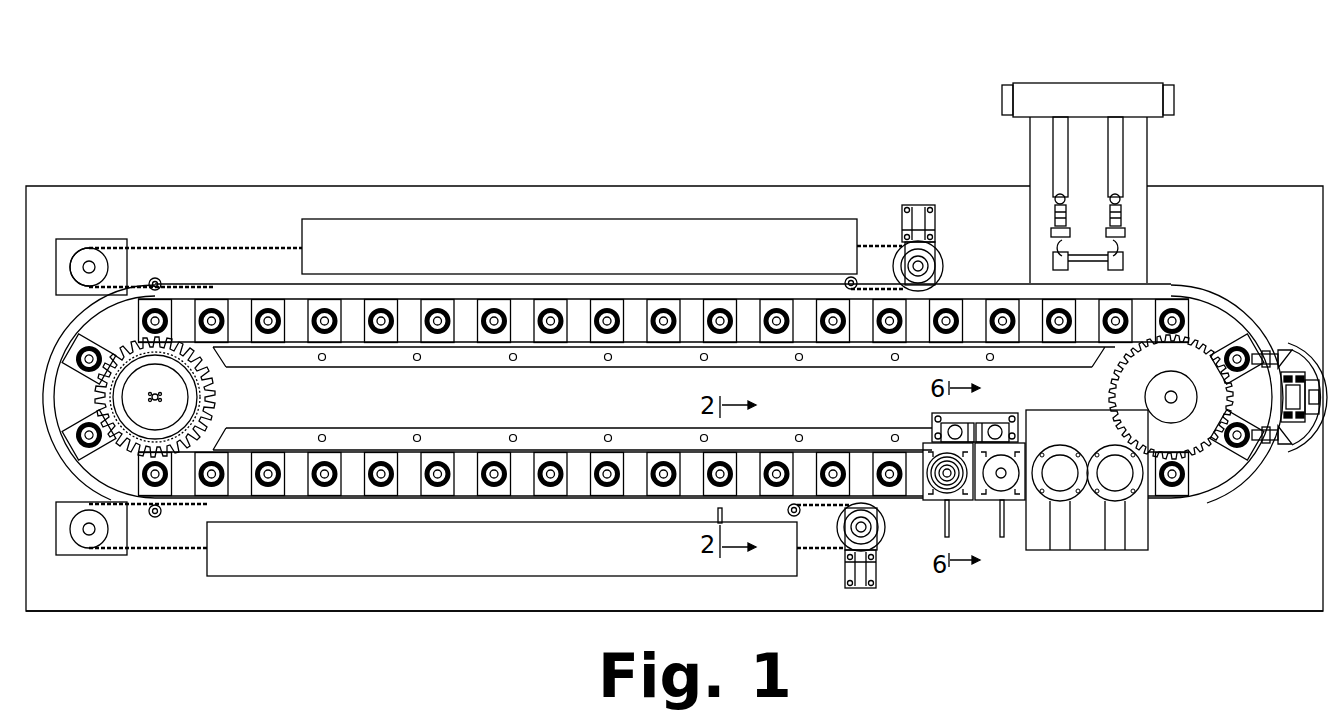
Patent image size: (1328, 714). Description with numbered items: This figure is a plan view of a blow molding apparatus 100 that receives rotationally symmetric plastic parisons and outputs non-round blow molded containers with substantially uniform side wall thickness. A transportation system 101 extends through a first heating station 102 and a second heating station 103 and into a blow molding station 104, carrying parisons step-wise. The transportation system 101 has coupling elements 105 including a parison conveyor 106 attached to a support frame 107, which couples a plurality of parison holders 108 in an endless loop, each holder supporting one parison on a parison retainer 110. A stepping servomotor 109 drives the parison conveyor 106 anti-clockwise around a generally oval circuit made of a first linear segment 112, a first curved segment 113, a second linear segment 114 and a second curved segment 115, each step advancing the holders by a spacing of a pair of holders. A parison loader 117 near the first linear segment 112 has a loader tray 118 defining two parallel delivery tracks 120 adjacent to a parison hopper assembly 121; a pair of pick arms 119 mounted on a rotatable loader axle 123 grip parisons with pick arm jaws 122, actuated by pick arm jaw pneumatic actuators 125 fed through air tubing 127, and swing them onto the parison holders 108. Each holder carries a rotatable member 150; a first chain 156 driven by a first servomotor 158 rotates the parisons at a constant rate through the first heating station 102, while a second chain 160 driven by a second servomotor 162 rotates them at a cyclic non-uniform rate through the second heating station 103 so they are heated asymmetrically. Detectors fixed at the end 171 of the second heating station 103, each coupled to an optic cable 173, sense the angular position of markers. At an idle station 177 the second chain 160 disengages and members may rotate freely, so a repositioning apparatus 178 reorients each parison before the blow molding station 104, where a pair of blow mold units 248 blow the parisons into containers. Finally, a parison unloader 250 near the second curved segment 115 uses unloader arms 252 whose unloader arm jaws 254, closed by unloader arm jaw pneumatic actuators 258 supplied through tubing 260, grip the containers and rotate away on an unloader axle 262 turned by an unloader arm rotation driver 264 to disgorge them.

The blow molding apparatus 100 is at (232, 115).
The transportation system 101 is at (657, 298).
The first heating station 102 is at (378, 218).
The second heating station 103 is at (368, 576).
The blow molding station 104 is at (1148, 550).
The coupling elements 105 is at (196, 298).
The parison conveyor 106 is at (575, 343).
The support frame 107 is at (330, 611).
The parison holder 108 is at (779, 470).
The stepping servomotor 109 is at (192, 397).
The parison retainer 110 is at (665, 470).
The first linear segment 112 is at (512, 360).
The first curved segment 113 is at (50, 500).
The second linear segment 114 is at (470, 452).
The second curved segment 115 is at (1196, 500).
The parison loader 117 is at (1013, 85).
The loader tray 118 is at (1088, 128).
The pick arm 119 is at (1051, 232).
The delivery track 120 is at (1053, 150).
The parison hopper assembly 121 is at (1062, 83).
The pick arm jaw 122 is at (1123, 205).
The loader axle 123 is at (1085, 255).
The pick arm jaw pneumatic actuator 125 is at (1053, 262).
The air tubing 127 is at (1125, 238).
The rotatable member 150 is at (380, 470).
The first chain 156 is at (245, 247).
The first servomotor 158 is at (902, 222).
The second chain 160 is at (160, 549).
The second servomotor 162 is at (878, 575).
The end of second heating station 171 is at (760, 611).
The optic cable 173 is at (718, 518).
The idle station 177 is at (932, 428).
The repositioning apparatus 178 is at (950, 505).
The blow mold unit 248 is at (1085, 550).
The parison unloader 250 is at (1312, 462).
The unloader arm 252 is at (1255, 350).
The unloader arm jaw 254 is at (1240, 482).
The unloader arm jaw pneumatic actuator 258 is at (1262, 452).
The tubing 260 is at (1284, 368).
The unloader axle 262 is at (1292, 447).
The unloader arm rotation driver 264 is at (1294, 343).